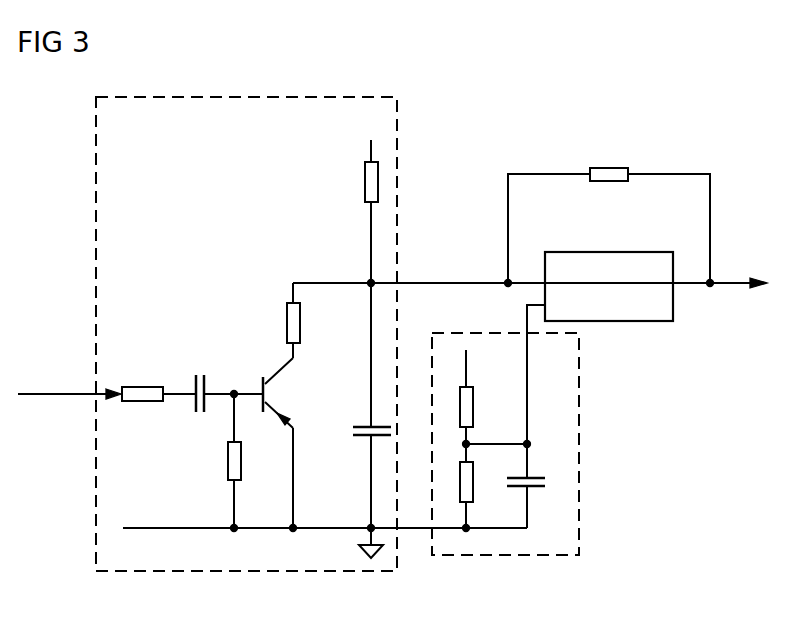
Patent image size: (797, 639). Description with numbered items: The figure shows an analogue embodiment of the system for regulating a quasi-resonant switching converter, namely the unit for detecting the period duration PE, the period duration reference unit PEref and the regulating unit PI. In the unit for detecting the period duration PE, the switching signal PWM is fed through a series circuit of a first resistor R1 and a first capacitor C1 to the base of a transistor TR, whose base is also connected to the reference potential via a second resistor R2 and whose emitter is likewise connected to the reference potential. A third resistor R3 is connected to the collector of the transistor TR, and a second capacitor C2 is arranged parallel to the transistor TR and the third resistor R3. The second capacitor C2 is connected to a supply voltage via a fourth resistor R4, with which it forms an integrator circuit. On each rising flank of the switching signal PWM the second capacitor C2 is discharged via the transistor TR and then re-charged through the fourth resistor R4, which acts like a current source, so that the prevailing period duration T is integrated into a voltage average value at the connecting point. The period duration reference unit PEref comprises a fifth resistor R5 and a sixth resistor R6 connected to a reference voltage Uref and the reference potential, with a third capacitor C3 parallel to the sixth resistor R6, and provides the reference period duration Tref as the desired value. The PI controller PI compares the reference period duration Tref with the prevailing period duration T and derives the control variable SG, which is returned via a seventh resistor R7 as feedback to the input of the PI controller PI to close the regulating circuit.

The unit for detecting the period duration PE is at (96, 255).
The switching signal PWM is at (62, 394).
The first resistor R1 is at (142, 388).
The first capacitor C1 is at (200, 375).
The second resistor R2 is at (228, 462).
The transistor TR is at (272, 382).
The third resistor R3 is at (287, 322).
The fourth resistor R4 is at (365, 180).
The second capacitor C2 is at (354, 431).
The period duration T is at (423, 283).
The seventh resistor R7 is at (609, 168).
The regulating unit PI is at (609, 252).
The control variable SG is at (730, 283).
The reference period duration Tref is at (527, 306).
The period duration reference unit PEref is at (507, 555).
The reference voltage Uref is at (466, 351).
The fifth resistor R5 is at (473, 398).
The sixth resistor R6 is at (473, 488).
The third capacitor C3 is at (545, 483).